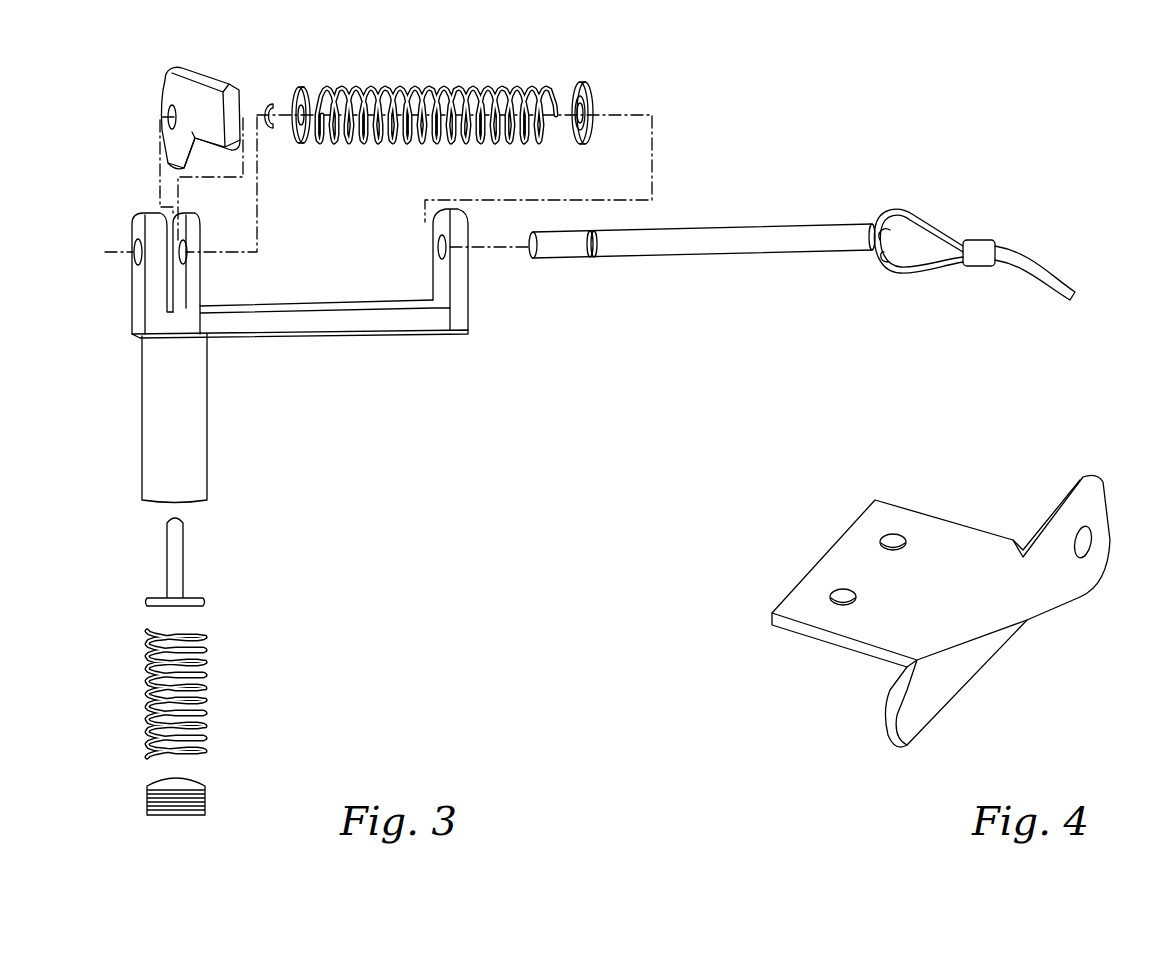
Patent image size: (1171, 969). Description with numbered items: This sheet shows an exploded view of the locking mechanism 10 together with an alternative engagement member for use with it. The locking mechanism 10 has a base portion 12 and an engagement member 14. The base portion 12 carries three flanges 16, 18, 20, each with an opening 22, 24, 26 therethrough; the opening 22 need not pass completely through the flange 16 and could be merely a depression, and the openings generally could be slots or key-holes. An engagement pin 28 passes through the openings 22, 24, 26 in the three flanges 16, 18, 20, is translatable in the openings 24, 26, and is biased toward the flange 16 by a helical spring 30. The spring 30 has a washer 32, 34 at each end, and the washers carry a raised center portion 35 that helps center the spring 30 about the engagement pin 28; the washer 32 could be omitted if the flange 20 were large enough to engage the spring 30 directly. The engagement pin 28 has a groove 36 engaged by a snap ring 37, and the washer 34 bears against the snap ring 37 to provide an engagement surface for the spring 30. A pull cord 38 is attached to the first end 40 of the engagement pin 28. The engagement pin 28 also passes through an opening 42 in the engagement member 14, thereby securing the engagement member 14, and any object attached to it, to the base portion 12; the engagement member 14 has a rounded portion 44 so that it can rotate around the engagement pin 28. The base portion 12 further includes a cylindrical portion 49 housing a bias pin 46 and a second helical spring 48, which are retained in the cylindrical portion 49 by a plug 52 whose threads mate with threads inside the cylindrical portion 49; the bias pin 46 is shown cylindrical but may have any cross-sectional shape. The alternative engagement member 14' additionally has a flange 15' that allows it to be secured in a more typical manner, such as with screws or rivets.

In FIG. 3, the locking mechanism 10 is at (724, 160).
In FIG. 3, the base portion 12 is at (354, 336).
In FIG. 3, the engagement member 14 is at (200, 97).
In FIG. 4, the engagement member 14' is at (1124, 669).
In FIG. 4, the flange 15' is at (941, 589).
In FIG. 3, the flange 16 is at (150, 306).
In FIG. 3, the flange 18 is at (203, 298).
In FIG. 3, the flange 20 is at (462, 297).
In FIG. 3, the opening 22 is at (130, 250).
In FIG. 3, the opening 24 is at (188, 252).
In FIG. 3, the opening 26 is at (437, 251).
In FIG. 3, the engagement pin 28 is at (718, 260).
In FIG. 3, the spring 30 is at (425, 90).
In FIG. 3, the washer 32 is at (590, 82).
In FIG. 3, the washer 34 is at (296, 86).
In FIG. 3, the raised center portion 35 is at (576, 98).
In FIG. 3, the groove 36 is at (592, 260).
In FIG. 3, the snap ring 37 is at (267, 102).
In FIG. 3, the pull cord 38 is at (1030, 244).
In FIG. 3, the first end 40 is at (856, 258).
In FIG. 3, the opening 42 is at (168, 118).
In FIG. 3, the rounded portion 44 is at (166, 153).
In FIG. 3, the bias pin 46 is at (165, 563).
In FIG. 3, the spring 48 is at (148, 693).
In FIG. 3, the cylindrical portion 49 is at (142, 436).
In FIG. 3, the plug 52 is at (148, 802).